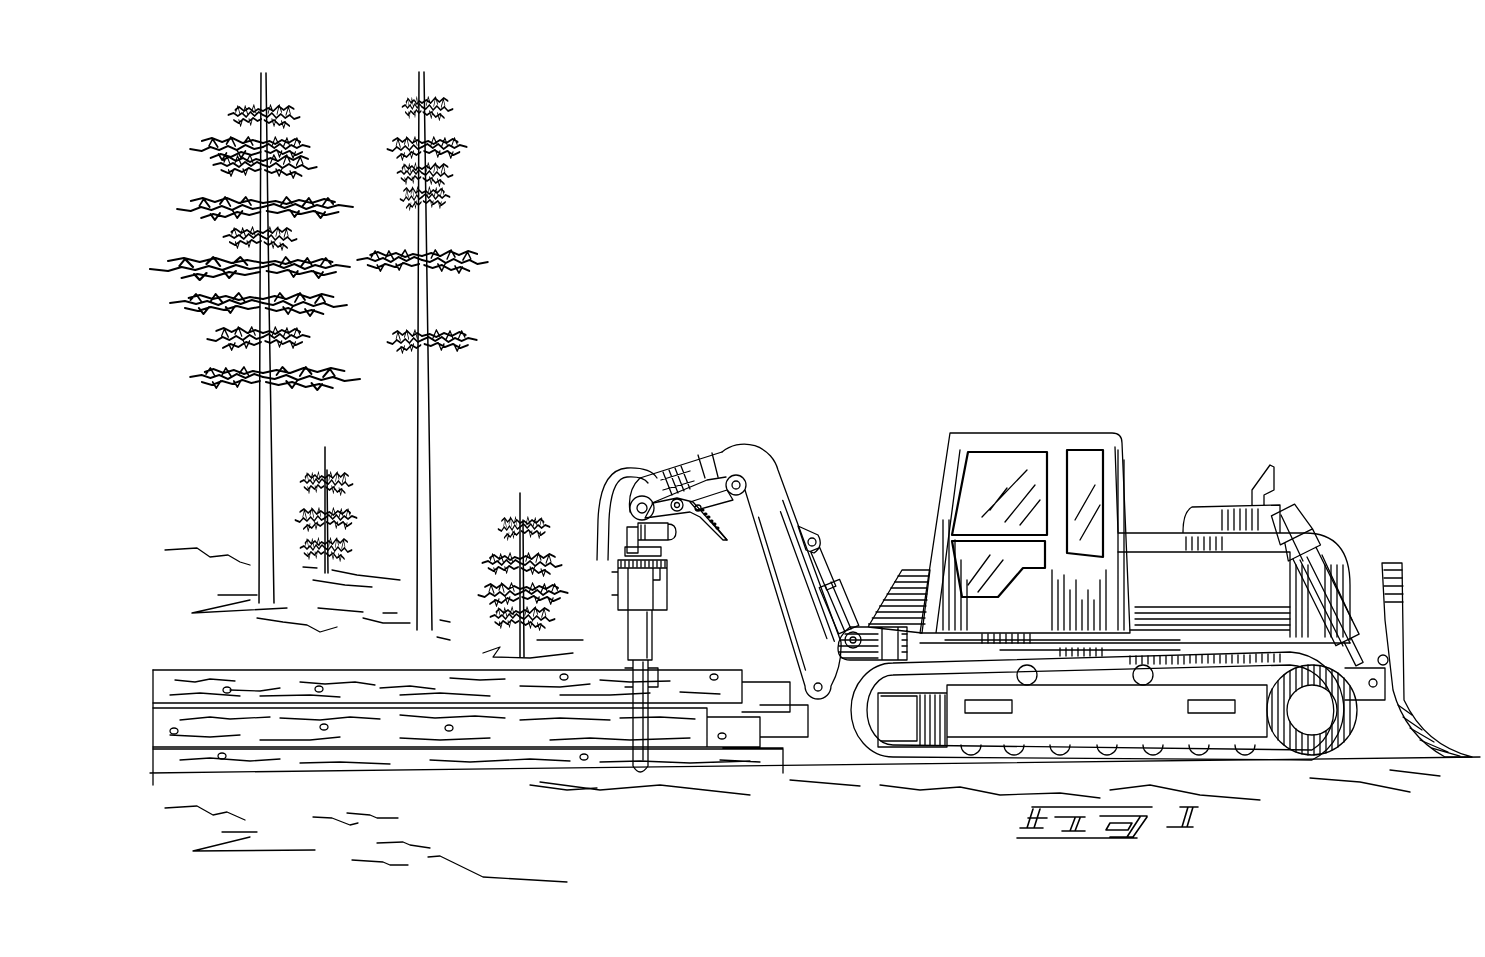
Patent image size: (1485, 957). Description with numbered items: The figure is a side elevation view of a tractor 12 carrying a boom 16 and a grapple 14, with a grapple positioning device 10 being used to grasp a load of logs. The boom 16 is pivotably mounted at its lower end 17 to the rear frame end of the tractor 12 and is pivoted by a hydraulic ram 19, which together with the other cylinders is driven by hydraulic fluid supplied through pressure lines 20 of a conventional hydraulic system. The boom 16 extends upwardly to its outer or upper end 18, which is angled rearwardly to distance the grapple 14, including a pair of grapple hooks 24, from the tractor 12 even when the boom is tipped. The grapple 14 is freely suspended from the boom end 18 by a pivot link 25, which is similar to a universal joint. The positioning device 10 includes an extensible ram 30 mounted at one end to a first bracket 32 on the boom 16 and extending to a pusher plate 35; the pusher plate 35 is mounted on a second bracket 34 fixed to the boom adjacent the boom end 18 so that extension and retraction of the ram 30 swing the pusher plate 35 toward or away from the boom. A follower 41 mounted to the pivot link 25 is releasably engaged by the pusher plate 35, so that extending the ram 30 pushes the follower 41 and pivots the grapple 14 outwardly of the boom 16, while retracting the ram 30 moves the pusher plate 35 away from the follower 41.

The grapple positioning device 10 is at (748, 592).
The tractor 12 is at (1084, 435).
The grapple 14 is at (598, 465).
The boom 16 is at (768, 448).
The boom end 17 is at (808, 672).
The boom end 18 is at (632, 497).
The hydraulic ram 19 is at (838, 603).
The pressure lines 20 is at (598, 537).
The grapple hooks 24 is at (640, 638).
The pivot link 25 is at (628, 522).
The extensible ram 30 is at (728, 507).
The first bracket 32 is at (730, 468).
The second bracket 34 is at (665, 478).
The pusher plate 35 is at (713, 544).
The follower 41 is at (675, 530).